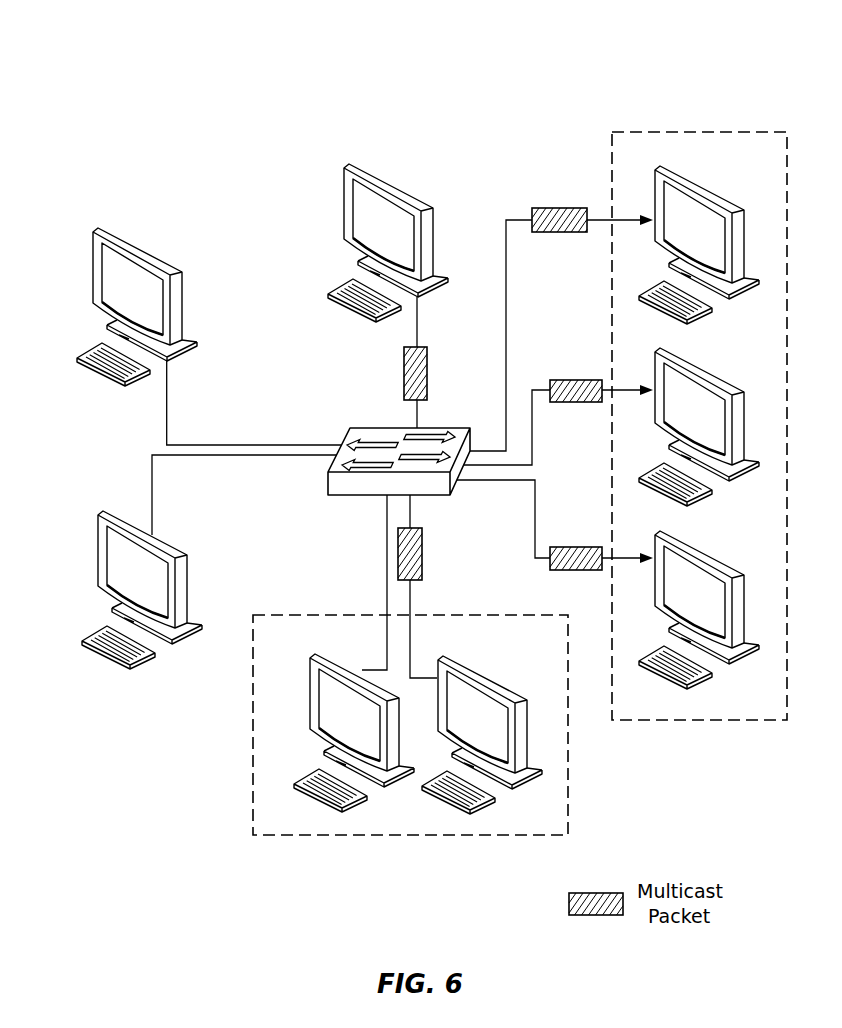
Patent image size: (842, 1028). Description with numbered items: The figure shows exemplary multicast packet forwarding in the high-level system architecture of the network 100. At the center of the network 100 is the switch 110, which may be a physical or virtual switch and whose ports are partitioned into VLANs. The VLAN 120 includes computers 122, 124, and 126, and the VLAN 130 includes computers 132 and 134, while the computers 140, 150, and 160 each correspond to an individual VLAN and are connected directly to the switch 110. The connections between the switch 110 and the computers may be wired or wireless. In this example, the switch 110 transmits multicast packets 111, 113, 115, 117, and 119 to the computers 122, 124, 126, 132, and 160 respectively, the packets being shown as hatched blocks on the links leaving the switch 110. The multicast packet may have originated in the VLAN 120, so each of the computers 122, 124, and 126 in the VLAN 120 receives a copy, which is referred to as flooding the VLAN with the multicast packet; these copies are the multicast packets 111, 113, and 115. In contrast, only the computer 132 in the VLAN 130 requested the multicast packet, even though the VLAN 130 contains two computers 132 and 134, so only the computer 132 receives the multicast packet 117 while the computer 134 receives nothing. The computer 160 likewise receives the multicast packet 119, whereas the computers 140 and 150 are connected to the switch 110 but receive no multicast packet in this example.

The network 100 is at (442, 66).
The switch 110 is at (390, 428).
The multicast packet 111 is at (565, 208).
The multicast packet 113 is at (580, 380).
The multicast packet 115 is at (597, 547).
The multicast packet 117 is at (422, 550).
The multicast packet 119 is at (427, 368).
The VLAN 120 is at (722, 132).
The computer 122 is at (711, 192).
The computer 124 is at (711, 374).
The computer 126 is at (711, 557).
The VLAN 130 is at (455, 615).
The computer 132 is at (491, 675).
The computer 134 is at (314, 657).
The computer 140 is at (101, 514).
The computer 150 is at (95, 230).
The computer 160 is at (347, 167).